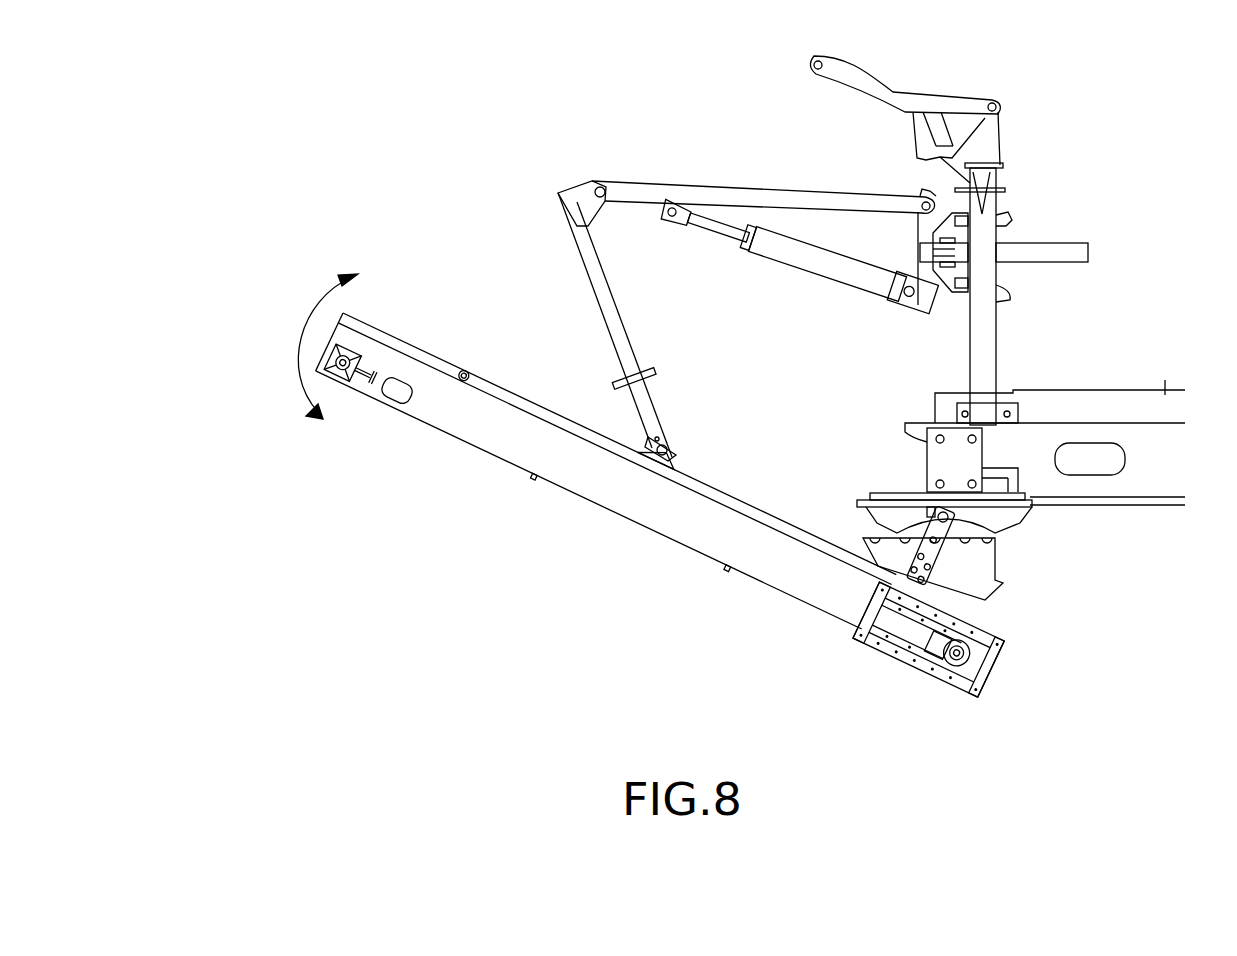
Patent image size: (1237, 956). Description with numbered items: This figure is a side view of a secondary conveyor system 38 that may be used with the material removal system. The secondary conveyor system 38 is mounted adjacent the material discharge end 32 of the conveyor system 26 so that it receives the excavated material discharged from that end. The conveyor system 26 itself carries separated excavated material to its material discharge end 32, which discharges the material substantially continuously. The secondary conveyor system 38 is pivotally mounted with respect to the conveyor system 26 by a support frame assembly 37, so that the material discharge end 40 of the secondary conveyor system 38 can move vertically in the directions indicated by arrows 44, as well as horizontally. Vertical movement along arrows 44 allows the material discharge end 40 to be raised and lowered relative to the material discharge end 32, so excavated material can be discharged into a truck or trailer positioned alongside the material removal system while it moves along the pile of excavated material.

The secondary conveyor system 38 is at (256, 112).
The support frame assembly 37 is at (782, 182).
The material discharge end 40 is at (350, 312).
The arrows 44 is at (300, 340).
The material discharge end 32 is at (905, 428).
The conveyor system 26 is at (1103, 522).